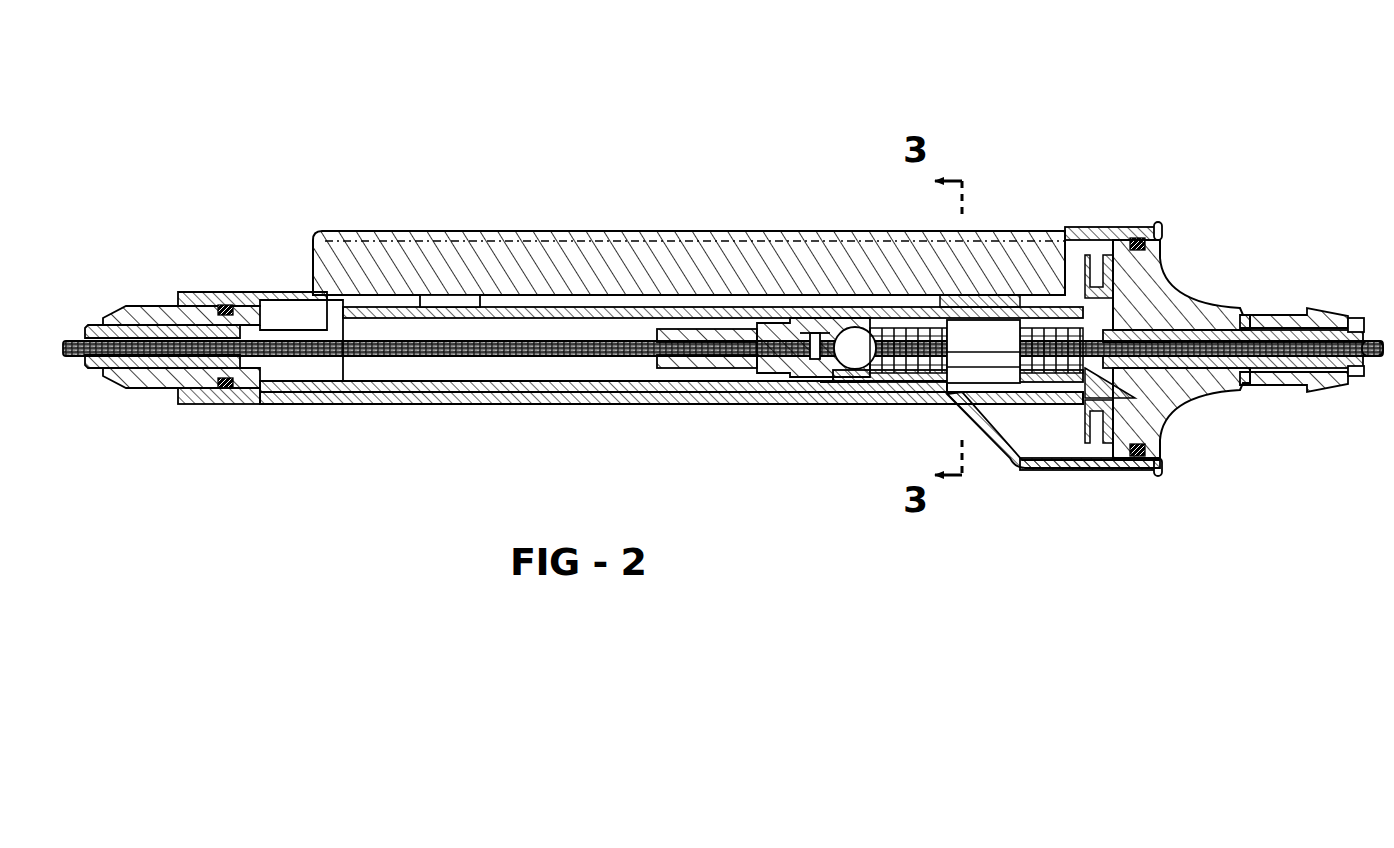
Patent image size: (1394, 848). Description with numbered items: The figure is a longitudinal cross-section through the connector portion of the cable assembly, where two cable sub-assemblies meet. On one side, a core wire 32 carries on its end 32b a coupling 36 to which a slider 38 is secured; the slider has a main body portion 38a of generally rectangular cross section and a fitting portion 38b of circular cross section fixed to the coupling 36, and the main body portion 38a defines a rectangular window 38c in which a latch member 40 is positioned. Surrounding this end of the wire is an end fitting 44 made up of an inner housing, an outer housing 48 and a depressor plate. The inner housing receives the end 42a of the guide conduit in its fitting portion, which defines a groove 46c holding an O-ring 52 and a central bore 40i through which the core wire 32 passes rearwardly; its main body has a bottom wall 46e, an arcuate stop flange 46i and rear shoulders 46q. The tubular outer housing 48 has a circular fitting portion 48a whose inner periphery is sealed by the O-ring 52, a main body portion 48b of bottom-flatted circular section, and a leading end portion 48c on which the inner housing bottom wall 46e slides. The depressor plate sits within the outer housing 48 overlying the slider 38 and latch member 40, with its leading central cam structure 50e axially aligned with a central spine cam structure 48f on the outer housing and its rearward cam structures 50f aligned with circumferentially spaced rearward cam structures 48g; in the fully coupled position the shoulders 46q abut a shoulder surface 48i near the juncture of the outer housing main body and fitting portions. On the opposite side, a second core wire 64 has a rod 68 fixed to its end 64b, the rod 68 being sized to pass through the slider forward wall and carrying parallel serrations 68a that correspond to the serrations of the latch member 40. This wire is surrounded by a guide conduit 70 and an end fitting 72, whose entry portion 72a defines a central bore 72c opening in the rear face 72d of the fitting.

The core wire 32 is at (437, 394).
The other end of the core wire 32b is at (626, 396).
The coupling 36 is at (697, 390).
The slider 38 is at (878, 316).
The main body portion of the slider 38a is at (830, 395).
The fitting portion of the slider 38b is at (775, 320).
The window 38c is at (950, 400).
The latch member 40 is at (1037, 318).
The central bore 40i is at (285, 393).
The end of the guide conduit 42a is at (95, 322).
The end fitting 44 is at (680, 125).
The groove 46c is at (233, 390).
The bottom wall of the inner housing 46e is at (772, 397).
The arcuate stop flange 46i is at (355, 405).
The shoulders 46q is at (305, 300).
The outer housing 48 is at (600, 231).
The fitting portion of the outer housing 48a is at (262, 300).
The main body portion of the outer housing 48b is at (730, 235).
The leading end portion of the outer housing 48c is at (1137, 237).
The central spine cam structure 48f is at (1045, 245).
The rearward cam structures 48g is at (545, 240).
The shoulder surface 48i is at (332, 240).
The leading central cam structure 50e is at (985, 330).
The rearward cam structures 50f is at (430, 298).
The O-ring 52 is at (225, 305).
The core wire 64 is at (1385, 368).
The other end of the core wire 64b is at (1190, 358).
The rod 68 is at (1150, 305).
The serrations 68a is at (883, 396).
The guide conduit 70 is at (1376, 343).
The end fitting 72 is at (1168, 245).
The entry portion 72a is at (1262, 325).
The central bore 72c is at (1308, 378).
The rear face 72d is at (1356, 330).